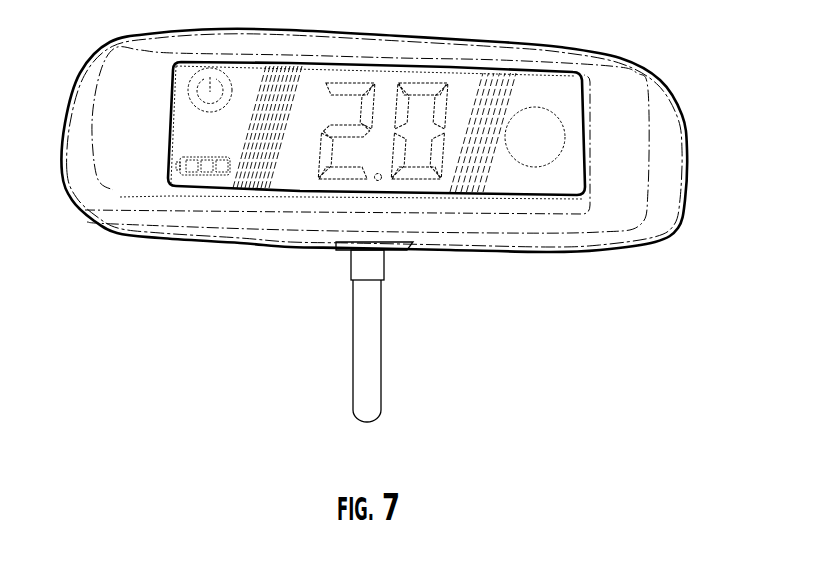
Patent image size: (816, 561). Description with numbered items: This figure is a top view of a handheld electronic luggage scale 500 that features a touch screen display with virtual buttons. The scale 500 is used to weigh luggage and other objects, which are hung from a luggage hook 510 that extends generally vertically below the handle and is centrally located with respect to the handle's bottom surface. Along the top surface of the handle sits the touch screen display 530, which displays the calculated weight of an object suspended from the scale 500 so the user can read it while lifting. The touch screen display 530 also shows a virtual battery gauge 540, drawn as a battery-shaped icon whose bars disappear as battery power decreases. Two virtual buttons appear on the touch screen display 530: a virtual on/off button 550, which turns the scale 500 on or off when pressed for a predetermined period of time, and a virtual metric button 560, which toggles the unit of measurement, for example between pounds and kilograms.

The electronic luggage scale 500 is at (673, 238).
The luggage hook 510 is at (297, 352).
The touch screen display 530 is at (565, 82).
The virtual battery gauge 540 is at (164, 182).
The virtual on/off button 550 is at (167, 81).
The virtual metric button 560 is at (565, 115).